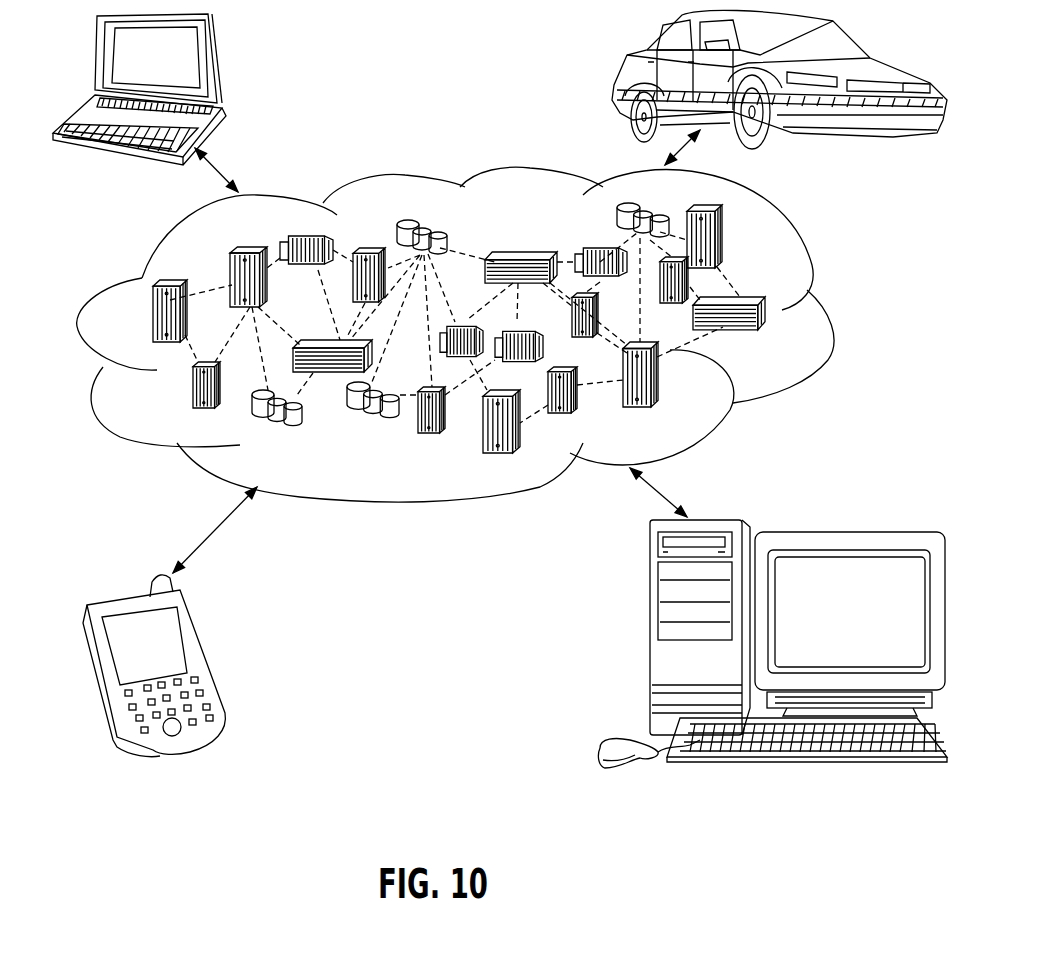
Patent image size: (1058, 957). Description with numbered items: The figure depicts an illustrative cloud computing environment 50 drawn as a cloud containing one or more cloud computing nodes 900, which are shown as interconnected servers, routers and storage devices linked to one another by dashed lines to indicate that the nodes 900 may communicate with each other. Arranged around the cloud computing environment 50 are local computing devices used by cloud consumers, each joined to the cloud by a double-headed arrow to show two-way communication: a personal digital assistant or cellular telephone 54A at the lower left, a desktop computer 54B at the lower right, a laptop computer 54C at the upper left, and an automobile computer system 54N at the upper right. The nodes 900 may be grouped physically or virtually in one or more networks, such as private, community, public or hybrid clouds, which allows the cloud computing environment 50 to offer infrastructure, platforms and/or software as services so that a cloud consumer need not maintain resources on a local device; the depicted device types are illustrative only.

The laptop computer 54C is at (217, 62).
The automobile computer system 54N is at (623, 68).
The cloud computing environment 50 is at (815, 272).
The cloud computing nodes 900 is at (787, 335).
The personal digital assistant or cellular telephone 54A is at (207, 657).
The desktop computer 54B is at (648, 633).